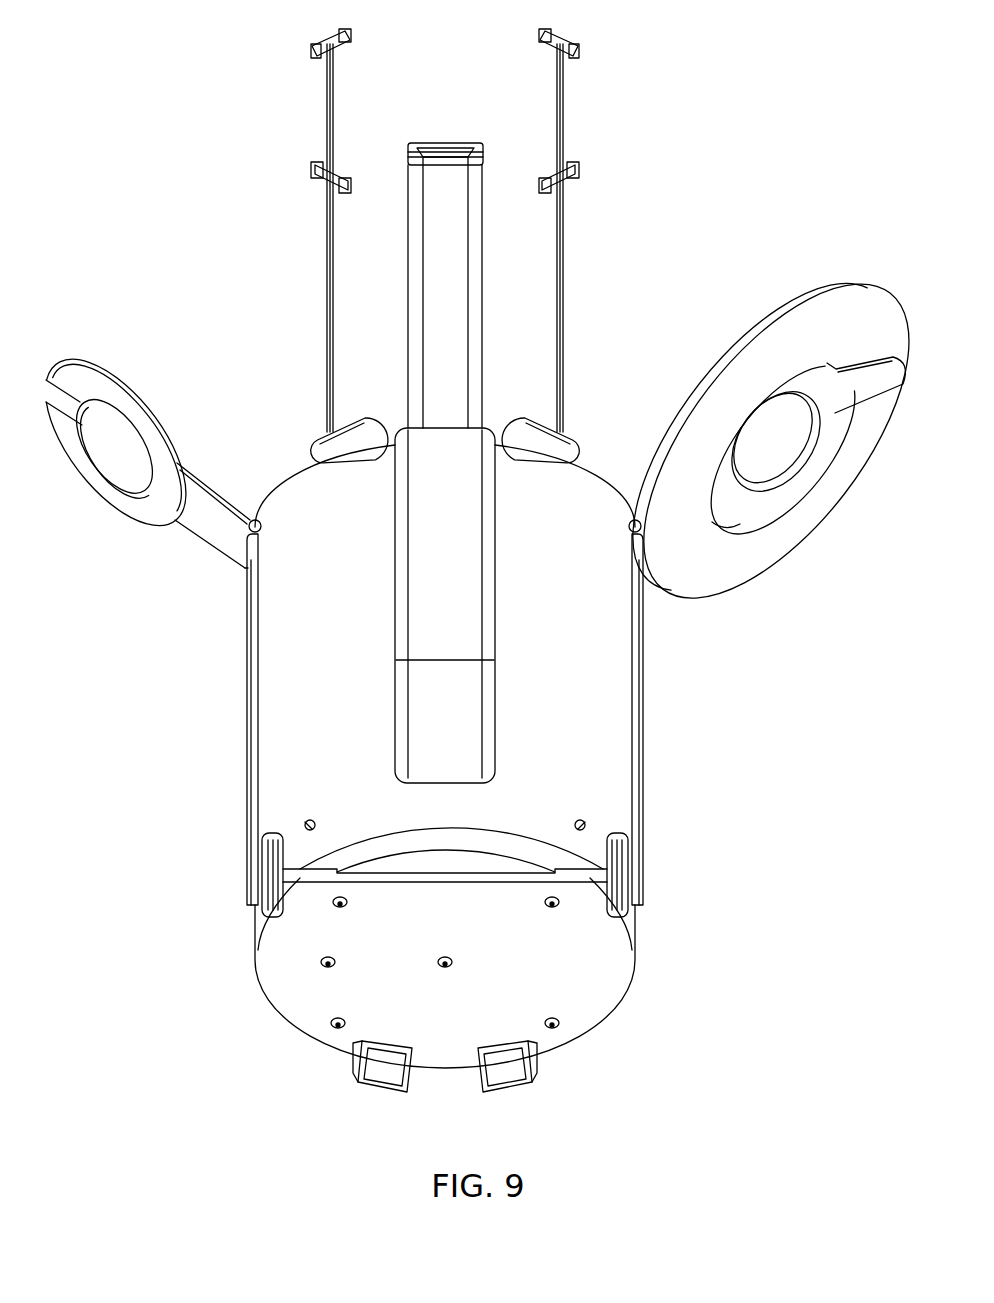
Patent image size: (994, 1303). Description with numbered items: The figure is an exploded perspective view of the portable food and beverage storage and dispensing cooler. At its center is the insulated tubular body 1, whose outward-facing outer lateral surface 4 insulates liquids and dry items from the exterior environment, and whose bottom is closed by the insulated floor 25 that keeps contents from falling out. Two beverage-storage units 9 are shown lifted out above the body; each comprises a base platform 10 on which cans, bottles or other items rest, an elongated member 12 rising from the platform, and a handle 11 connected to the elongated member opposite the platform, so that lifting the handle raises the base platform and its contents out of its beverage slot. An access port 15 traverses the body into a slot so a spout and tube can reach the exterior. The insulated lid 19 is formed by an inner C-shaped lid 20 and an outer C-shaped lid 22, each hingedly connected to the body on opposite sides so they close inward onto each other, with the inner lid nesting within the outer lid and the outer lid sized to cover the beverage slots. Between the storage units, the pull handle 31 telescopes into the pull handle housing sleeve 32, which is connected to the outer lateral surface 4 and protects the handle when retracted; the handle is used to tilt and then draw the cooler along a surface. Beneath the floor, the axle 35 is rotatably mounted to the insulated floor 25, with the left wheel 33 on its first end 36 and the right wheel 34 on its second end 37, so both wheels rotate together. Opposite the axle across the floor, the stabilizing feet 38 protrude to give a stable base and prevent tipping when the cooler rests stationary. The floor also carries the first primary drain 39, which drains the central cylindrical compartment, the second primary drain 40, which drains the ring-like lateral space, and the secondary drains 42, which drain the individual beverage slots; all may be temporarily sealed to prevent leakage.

The insulated tubular body 1 is at (607, 480).
The outer lateral surface 4 is at (320, 635).
The beverage-storage unit 9 is at (305, 127).
The base platform 10 is at (312, 447).
The handle 11 is at (345, 37).
The elongated member 12 is at (334, 100).
The access port 15 is at (305, 820).
The insulated lid 19 is at (64, 481).
The inner C-shaped lid 20 is at (116, 388).
The outer C-shaped lid 22 is at (788, 325).
The insulated floor 25 is at (627, 982).
The pull handle 31 is at (442, 150).
The pull handle housing sleeve 32 is at (487, 572).
The left wheel 33 is at (625, 885).
The right wheel 34 is at (265, 893).
The axle 35 is at (463, 878).
The first end 36 is at (600, 878).
The second end 37 is at (290, 878).
The stabilizing foot 38 is at (362, 1062).
The first primary drain 39 is at (452, 968).
The second primary drain 40 is at (336, 968).
The secondary drains 42 is at (342, 906).